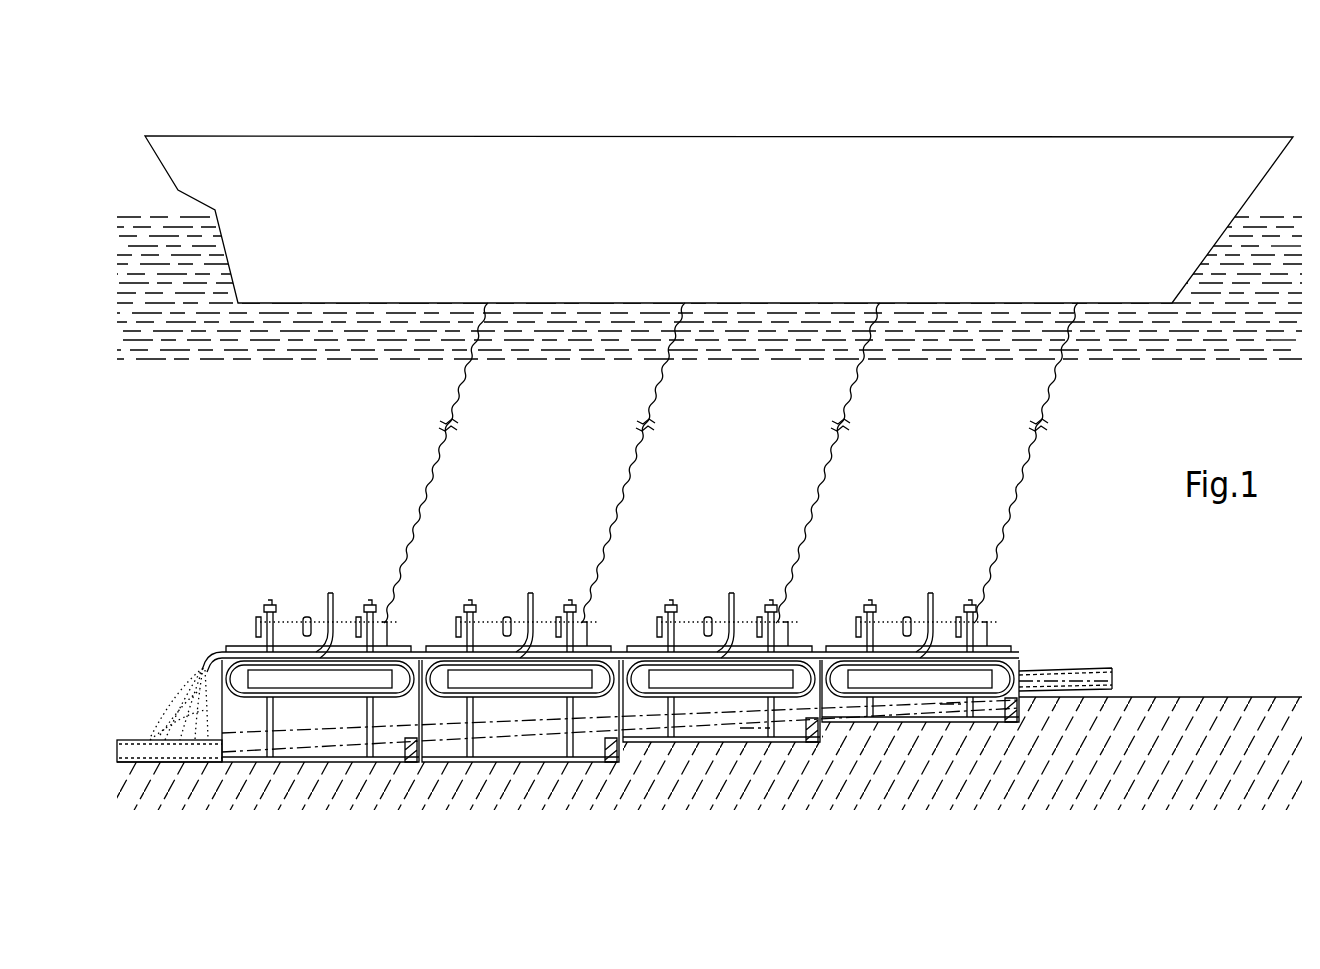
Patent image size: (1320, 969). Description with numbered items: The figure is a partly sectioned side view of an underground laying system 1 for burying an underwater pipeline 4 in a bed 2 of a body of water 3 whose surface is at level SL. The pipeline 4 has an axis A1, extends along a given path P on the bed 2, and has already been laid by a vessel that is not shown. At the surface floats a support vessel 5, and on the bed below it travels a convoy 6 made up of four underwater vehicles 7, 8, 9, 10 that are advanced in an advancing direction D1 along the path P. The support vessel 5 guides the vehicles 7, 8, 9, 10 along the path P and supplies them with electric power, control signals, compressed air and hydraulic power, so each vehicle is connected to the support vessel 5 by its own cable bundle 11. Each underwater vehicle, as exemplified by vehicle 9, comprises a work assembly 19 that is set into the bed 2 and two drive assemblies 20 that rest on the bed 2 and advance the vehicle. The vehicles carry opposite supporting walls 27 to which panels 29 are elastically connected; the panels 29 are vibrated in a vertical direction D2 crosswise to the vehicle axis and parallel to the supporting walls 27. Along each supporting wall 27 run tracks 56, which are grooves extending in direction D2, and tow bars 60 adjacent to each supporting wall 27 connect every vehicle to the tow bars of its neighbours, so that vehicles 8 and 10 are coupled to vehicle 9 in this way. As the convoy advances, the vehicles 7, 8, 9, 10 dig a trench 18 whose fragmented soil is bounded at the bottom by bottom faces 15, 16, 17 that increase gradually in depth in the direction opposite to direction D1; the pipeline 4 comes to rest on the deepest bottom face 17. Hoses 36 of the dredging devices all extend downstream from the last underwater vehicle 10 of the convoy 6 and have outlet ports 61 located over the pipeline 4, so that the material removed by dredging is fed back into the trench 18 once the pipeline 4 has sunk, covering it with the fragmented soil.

The underground laying system 1 is at (199, 92).
The bed 2 is at (1235, 738).
The body of water 3 is at (1268, 236).
The underwater pipeline 4 is at (1068, 672).
The support vessel 5 is at (822, 157).
The convoy 6 is at (237, 574).
The underwater vehicle 7 is at (950, 581).
The underwater vehicle 8 is at (742, 584).
The underwater vehicle 9 is at (537, 577).
The underwater vehicle 10 is at (349, 580).
The cable bundle 11 is at (461, 393).
The bottom face 15 is at (950, 706).
The bottom face 16 is at (752, 730).
The bottom face 17 is at (132, 742).
The trench 18 is at (145, 712).
The work assembly 19 is at (388, 643).
The drive assemblies 20 is at (332, 703).
The supporting wall 27 is at (312, 745).
The panel 29 is at (250, 748).
The hose 36 is at (328, 610).
The track 56 is at (275, 631).
The tow bar 60 is at (238, 745).
The outlet port 61 is at (202, 668).
The level SL is at (163, 214).
The advancing direction D1 is at (1136, 575).
The vertical direction D2 is at (292, 560).
The path P is at (1238, 622).
The axis A1 is at (1134, 679).